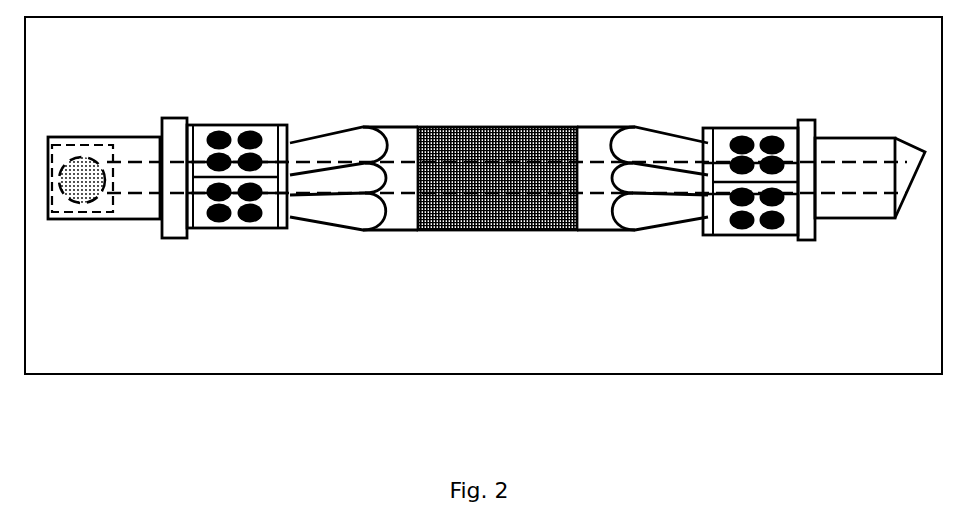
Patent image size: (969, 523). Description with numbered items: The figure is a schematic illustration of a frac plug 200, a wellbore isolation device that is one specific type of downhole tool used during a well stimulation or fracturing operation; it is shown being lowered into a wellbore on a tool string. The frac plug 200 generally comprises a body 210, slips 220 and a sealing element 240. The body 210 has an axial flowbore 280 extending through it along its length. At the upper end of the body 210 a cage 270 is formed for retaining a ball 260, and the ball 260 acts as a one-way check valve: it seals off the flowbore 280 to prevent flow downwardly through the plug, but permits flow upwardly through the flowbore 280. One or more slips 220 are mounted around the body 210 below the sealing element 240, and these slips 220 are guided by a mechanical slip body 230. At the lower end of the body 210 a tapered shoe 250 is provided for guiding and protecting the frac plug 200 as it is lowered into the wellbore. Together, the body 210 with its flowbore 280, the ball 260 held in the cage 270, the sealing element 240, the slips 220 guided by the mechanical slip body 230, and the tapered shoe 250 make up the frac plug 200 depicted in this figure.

The frac plug 200 is at (490, 268).
The body 210 is at (133, 137).
The slips 220 is at (235, 125).
The mechanical slip body 230 is at (347, 131).
The sealing element 240 is at (483, 127).
The tapered shoe 250 is at (860, 138).
The ball 260 is at (73, 203).
The cage 270 is at (99, 212).
The axial flowbore 280 is at (140, 193).